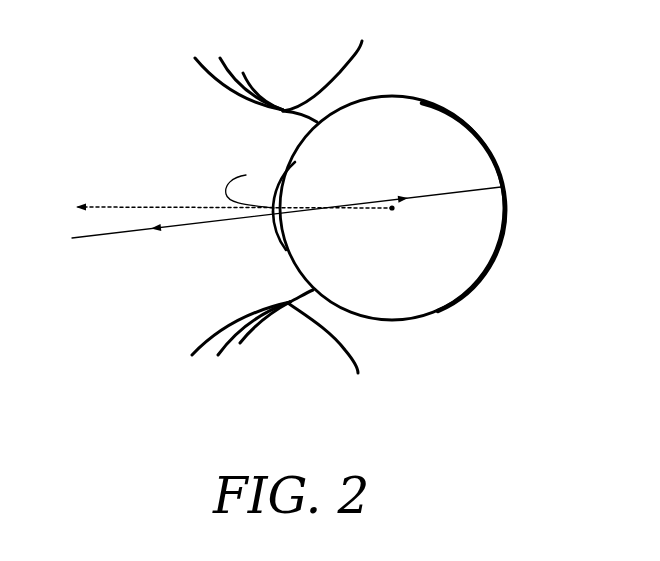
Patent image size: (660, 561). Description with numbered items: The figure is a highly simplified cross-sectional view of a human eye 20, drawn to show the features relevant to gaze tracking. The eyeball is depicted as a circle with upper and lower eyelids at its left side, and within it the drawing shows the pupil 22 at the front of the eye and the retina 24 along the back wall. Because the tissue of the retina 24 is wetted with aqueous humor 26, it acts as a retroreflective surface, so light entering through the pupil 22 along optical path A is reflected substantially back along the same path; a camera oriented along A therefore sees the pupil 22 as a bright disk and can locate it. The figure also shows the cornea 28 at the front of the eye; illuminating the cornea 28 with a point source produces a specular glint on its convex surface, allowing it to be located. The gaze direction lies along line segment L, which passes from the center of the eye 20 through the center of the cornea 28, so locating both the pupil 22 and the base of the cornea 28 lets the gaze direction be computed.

The human eye 20 is at (342, 199).
The pupil 22 is at (289, 200).
The retina 24 is at (463, 128).
The aqueous humor 26 is at (458, 277).
The cornea 28 is at (272, 231).